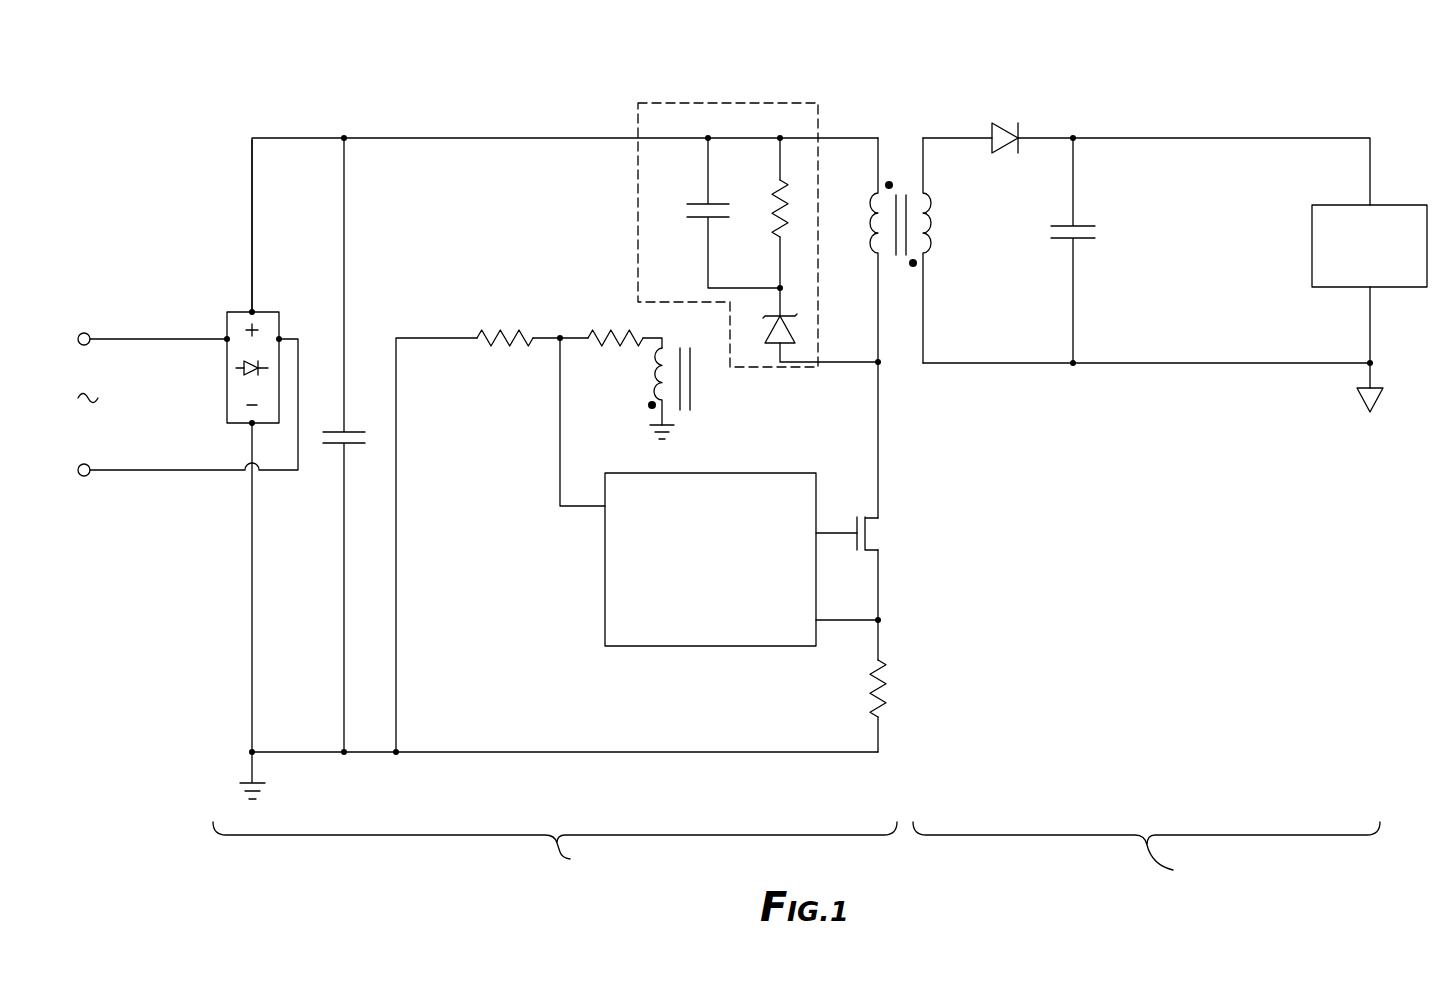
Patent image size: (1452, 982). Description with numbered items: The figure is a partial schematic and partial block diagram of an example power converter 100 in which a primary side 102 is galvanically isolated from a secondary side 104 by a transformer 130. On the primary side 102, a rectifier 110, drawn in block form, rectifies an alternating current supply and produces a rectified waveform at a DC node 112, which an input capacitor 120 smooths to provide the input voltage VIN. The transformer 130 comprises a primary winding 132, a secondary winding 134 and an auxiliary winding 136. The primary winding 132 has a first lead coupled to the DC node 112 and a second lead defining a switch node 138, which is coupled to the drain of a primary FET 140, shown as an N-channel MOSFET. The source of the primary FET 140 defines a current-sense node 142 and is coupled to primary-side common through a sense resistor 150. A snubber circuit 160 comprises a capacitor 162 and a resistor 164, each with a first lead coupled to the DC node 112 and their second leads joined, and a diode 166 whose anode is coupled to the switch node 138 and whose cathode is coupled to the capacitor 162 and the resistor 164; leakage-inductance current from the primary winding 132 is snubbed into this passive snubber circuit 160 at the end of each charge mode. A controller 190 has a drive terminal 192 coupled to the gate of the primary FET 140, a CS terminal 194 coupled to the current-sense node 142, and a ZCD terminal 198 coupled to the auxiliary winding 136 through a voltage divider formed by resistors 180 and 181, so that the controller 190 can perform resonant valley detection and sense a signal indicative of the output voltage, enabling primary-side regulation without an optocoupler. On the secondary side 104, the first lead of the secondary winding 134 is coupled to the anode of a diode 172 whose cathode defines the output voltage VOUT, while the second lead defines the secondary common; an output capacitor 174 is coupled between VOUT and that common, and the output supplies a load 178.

The power converter 100 is at (157, 64).
The primary side 102 is at (555, 850).
The secondary side 104 is at (1146, 857).
The rectifier 110 is at (212, 304).
The DC node 112 is at (252, 311).
The input capacitor 120 is at (332, 451).
The transformer 130 is at (903, 125).
The primary winding 132 is at (883, 212).
The secondary winding 134 is at (930, 223).
The auxiliary winding 136 is at (644, 376).
The switch node 138 is at (875, 366).
The primary FET 140 is at (847, 517).
The current-sense node 142 is at (885, 622).
The sense resistor 150 is at (872, 703).
The snubber circuit 160 is at (707, 102).
The capacitor 162 is at (704, 203).
The resistor 164 is at (775, 237).
The diode 166 is at (775, 347).
The diode 172 is at (1010, 130).
The output capacitor 174 is at (1065, 225).
The load 178 is at (1312, 222).
The resistor 180 is at (480, 333).
The resistor 181 is at (602, 330).
The controller 190 is at (710, 559).
The drive terminal 192 is at (820, 538).
The CS terminal 194 is at (820, 625).
The ZCD terminal 198 is at (605, 500).